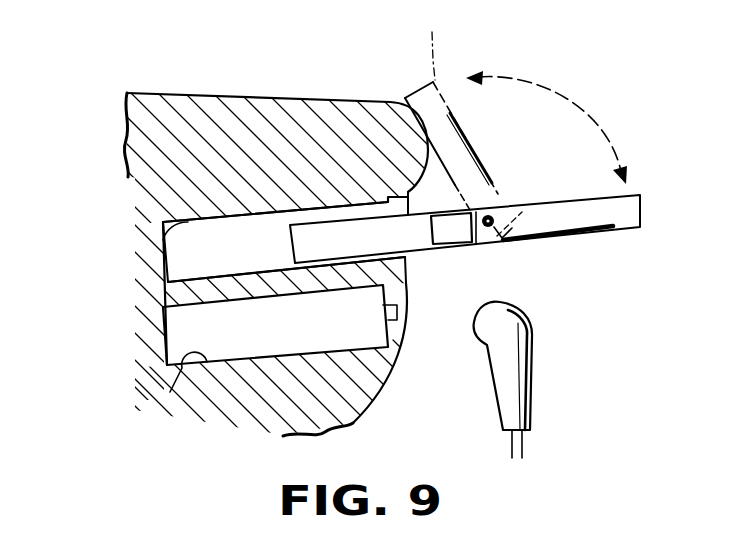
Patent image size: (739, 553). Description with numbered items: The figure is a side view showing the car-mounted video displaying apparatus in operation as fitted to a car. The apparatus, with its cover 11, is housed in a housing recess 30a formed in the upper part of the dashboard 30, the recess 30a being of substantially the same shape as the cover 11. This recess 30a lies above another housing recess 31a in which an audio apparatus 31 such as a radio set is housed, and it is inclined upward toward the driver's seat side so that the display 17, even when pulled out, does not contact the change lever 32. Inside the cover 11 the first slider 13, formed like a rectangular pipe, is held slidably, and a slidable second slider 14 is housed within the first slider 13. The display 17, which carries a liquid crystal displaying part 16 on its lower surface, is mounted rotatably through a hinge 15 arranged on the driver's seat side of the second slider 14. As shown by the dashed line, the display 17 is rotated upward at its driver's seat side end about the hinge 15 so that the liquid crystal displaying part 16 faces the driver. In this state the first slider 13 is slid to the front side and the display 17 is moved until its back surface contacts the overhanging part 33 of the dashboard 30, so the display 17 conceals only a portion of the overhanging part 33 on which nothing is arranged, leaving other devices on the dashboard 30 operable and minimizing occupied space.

The dashboard 30 is at (208, 108).
The housing recess 30a is at (155, 233).
The cover 11 is at (185, 263).
The first slider 13 is at (312, 237).
The second slider 14 is at (452, 230).
The hinge 15 is at (497, 242).
The liquid crystal displaying part 16 is at (595, 233).
The display 17 is at (652, 258).
The audio apparatus 31 is at (200, 350).
The housing recess 31a is at (170, 392).
The change lever 32 is at (518, 358).
The overhanging part 33 is at (358, 110).